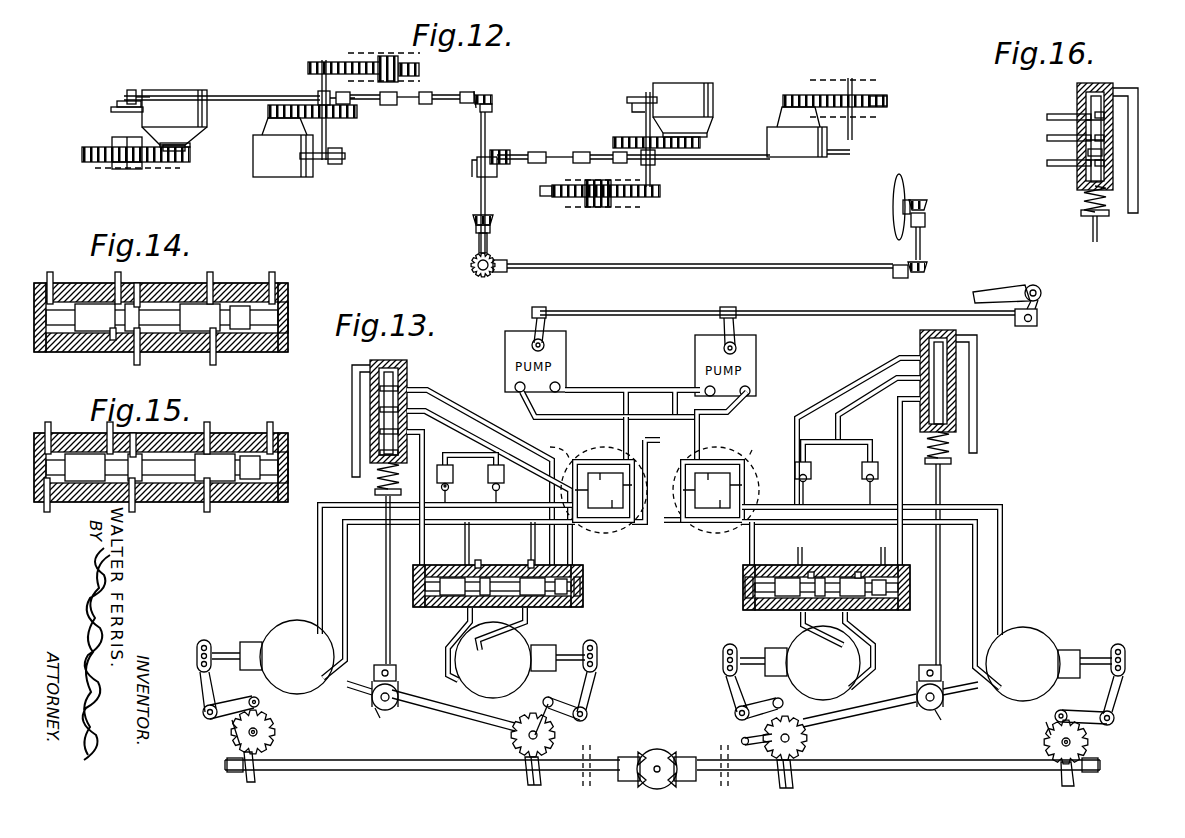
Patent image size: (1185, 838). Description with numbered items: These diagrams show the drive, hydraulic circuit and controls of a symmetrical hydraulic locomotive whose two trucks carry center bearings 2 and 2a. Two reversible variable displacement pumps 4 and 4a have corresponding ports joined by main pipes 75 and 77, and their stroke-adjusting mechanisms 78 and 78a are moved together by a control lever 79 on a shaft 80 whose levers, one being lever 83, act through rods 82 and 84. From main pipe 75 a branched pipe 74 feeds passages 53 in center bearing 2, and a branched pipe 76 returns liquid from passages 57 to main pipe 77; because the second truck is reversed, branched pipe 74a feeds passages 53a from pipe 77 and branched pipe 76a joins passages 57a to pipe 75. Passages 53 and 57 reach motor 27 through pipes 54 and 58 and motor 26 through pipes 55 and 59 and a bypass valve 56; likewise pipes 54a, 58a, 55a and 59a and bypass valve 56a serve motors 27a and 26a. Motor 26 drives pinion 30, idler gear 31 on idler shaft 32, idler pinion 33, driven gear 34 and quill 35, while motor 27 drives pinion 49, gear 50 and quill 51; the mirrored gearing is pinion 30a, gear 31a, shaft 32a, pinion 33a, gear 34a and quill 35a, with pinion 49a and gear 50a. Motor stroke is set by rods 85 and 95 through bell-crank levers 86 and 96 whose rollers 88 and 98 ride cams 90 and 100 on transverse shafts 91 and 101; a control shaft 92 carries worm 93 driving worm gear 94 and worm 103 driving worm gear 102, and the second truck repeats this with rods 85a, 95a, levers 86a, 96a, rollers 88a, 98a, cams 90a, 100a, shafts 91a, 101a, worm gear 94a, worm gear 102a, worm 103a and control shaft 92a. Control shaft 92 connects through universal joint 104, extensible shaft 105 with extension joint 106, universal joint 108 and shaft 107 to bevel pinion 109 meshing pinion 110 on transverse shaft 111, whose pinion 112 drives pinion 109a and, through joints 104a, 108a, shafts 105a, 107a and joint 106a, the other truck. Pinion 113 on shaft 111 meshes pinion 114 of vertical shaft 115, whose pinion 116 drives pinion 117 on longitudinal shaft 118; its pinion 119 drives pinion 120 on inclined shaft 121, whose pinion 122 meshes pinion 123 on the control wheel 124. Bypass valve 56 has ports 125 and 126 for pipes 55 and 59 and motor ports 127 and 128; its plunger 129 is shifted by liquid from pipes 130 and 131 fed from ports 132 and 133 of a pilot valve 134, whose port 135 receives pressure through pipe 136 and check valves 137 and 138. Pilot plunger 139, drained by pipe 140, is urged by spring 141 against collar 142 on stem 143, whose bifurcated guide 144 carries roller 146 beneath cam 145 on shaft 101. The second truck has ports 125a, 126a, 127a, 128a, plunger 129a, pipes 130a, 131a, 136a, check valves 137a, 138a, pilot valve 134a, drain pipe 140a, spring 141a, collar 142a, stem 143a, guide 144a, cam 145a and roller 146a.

In FIG. 13, the center bearing 2 is at (553, 447).
In FIG. 13, the center bearing 2a is at (759, 445).
In FIG. 13, the reversible variable displacement pump 4 is at (566, 344).
In FIG. 13, the reversible variable displacement pump 4a is at (756, 345).
In FIG. 12, the rotary variable displacement hydraulic motor 26 is at (283, 147).
In FIG. 13, the rotary variable displacement hydraulic motor 26 is at (520, 660).
In FIG. 12, the rotary variable displacement hydraulic motor 26a is at (683, 110).
In FIG. 13, the rotary variable displacement hydraulic motor 26a is at (800, 663).
In FIG. 12, the rotary variable displacement hydraulic motor 27 is at (174, 120).
In FIG. 13, the rotary variable displacement hydraulic motor 27 is at (273, 657).
In FIG. 12, the rotary variable displacement hydraulic motor 27a is at (808, 132).
In FIG. 13, the rotary variable displacement hydraulic motor 27a is at (1049, 664).
In FIG. 12, the driving pinion 30 is at (268, 117).
In FIG. 12, the driving pinion 30a is at (700, 130).
In FIG. 12, the idler gear 31 is at (345, 157).
In FIG. 12, the idler gear 31a is at (637, 100).
In FIG. 12, the idler shaft 32 is at (318, 96).
In FIG. 12, the idler shaft 32a is at (656, 166).
In FIG. 12, the idler pinion 33 is at (310, 62).
In FIG. 12, the idler pinion 33a is at (656, 197).
In FIG. 12, the driven gear 34 is at (419, 66).
In FIG. 12, the driven gear 34a is at (548, 197).
In FIG. 12, the driving tube or quill 35 is at (386, 55).
In FIG. 12, the driving tube or quill 35a is at (596, 208).
In FIG. 12, the pinion 49 is at (178, 162).
In FIG. 12, the pinion 49a is at (796, 95).
In FIG. 12, the driven gear 50 is at (96, 164).
In FIG. 12, the driven gear 50a is at (887, 101).
In FIG. 12, the driving quill 51 is at (112, 140).
In FIG. 13, the passages 53 is at (592, 534).
In FIG. 13, the passages 53a is at (740, 534).
In FIG. 13, the pipe 54 is at (348, 614).
In FIG. 13, the pipe 54a is at (979, 605).
In FIG. 14, the pipe 55 is at (115, 282).
In FIG. 13, the pipe 55 is at (465, 540).
In FIG. 15, the pipe 55a is at (211, 437).
In FIG. 13, the pipe 55a is at (856, 544).
In FIG. 14, the bypass valve 56 is at (281, 354).
In FIG. 13, the bypass valve 56 is at (584, 604).
In FIG. 15, the bypass valve 56a is at (281, 505).
In FIG. 13, the bypass valve 56a is at (742, 590).
In FIG. 13, the passages 57 is at (603, 491).
In FIG. 13, the passages 57a is at (712, 491).
In FIG. 13, the pipe 58 is at (317, 574).
In FIG. 13, the pipe 58a is at (1003, 568).
In FIG. 14, the pipe 59 is at (214, 284).
In FIG. 13, the pipe 59 is at (531, 540).
In FIG. 15, the pipe 59a is at (107, 433).
In FIG. 13, the pipe 59a is at (790, 521).
In FIG. 13, the pipe 74 is at (622, 439).
In FIG. 13, the branched pipe 74a is at (703, 439).
In FIG. 13, the main pipe 75 is at (659, 387).
In FIG. 13, the pipe 76 is at (649, 445).
In FIG. 13, the branched pipe 76a is at (680, 515).
In FIG. 13, the main pipe 77 is at (604, 414).
In FIG. 13, the stroke-adjusting mechanism 78 is at (534, 324).
In FIG. 13, the stroke-adjusting mechanism 78a is at (720, 325).
In FIG. 13, the control lever 79 is at (1000, 292).
In FIG. 13, the shaft 80 is at (1041, 294).
In FIG. 13, the rod 82 is at (645, 311).
In FIG. 13, the lever 83 is at (1040, 312).
In FIG. 13, the rod 84 is at (846, 311).
In FIG. 13, the rod 85 is at (200, 642).
In FIG. 13, the rod 85a is at (1127, 660).
In FIG. 13, the bell-crank lever 86 is at (207, 693).
In FIG. 13, the bell-crank lever 86a is at (1116, 692).
In FIG. 13, the roller 88 is at (260, 704).
In FIG. 13, the roller 88a is at (1055, 716).
In FIG. 13, the cam 90 is at (275, 737).
In FIG. 13, the cam 90a is at (1088, 743).
In FIG. 13, the transverse shaft 91 is at (258, 731).
In FIG. 13, the transverse shaft 91a is at (1058, 745).
In FIG. 12, the control shaft 92 is at (262, 96).
In FIG. 13, the control shaft 92 is at (405, 762).
In FIG. 12, the control shaft 92a is at (741, 160).
In FIG. 13, the control shaft 92a is at (920, 770).
In FIG. 12, the worm 93 is at (135, 90).
In FIG. 13, the worm 93 is at (245, 782).
In FIG. 13, the worm gear 94 is at (232, 745).
In FIG. 13, the worm gear 94a is at (1045, 741).
In FIG. 13, the rod 95 is at (599, 658).
In FIG. 13, the rod 95a is at (723, 655).
In FIG. 13, the bell-crank lever 96 is at (588, 690).
In FIG. 13, the bell-crank lever 96a is at (728, 685).
In FIG. 13, the roller 98 is at (555, 688).
In FIG. 13, the roller 98a is at (778, 697).
In FIG. 13, the cam 100 is at (540, 722).
In FIG. 13, the cam 100a is at (750, 737).
In FIG. 13, the transverse shaft 101 is at (455, 718).
In FIG. 13, the transverse shaft 101a is at (875, 721).
In FIG. 13, the worm gear 102 is at (512, 742).
In FIG. 13, the worm gear 102a is at (808, 742).
In FIG. 13, the worm 103 is at (526, 788).
In FIG. 13, the worm 103a is at (792, 786).
In FIG. 12, the universal joint 104 is at (348, 105).
In FIG. 12, the universal joint 104a is at (618, 163).
In FIG. 12, the extensible shaft 105 is at (372, 92).
In FIG. 12, the extensible shaft 105a is at (602, 155).
In FIG. 12, the extension joint 106 is at (390, 105).
In FIG. 12, the extension joint 106a is at (577, 152).
In FIG. 12, the shaft 107 is at (449, 93).
In FIG. 12, the shaft 107a is at (535, 146).
In FIG. 12, the universal joint 108 is at (426, 104).
In FIG. 12, the universal joint 108a is at (537, 164).
In FIG. 12, the bevel pinion 109 is at (485, 95).
In FIG. 12, the bevel pinion 109a is at (502, 150).
In FIG. 12, the bevel pinion 110 is at (492, 106).
In FIG. 12, the transverse shaft 111 is at (480, 196).
In FIG. 12, the bevel pinion 112 is at (477, 167).
In FIG. 12, the bevel pinion 113 is at (474, 229).
In FIG. 12, the bevel pinion 114 is at (492, 233).
In FIG. 12, the vertical shaft 115 is at (478, 247).
In FIG. 12, the bevel pinion 116 is at (471, 270).
In FIG. 12, the bevel pinion 117 is at (495, 272).
In FIG. 12, the longitudinal shaft 118 is at (648, 263).
In FIG. 12, the bevel pinion 119 is at (900, 278).
In FIG. 12, the bevel pinion 120 is at (926, 269).
In FIG. 12, the inclined shaft 121 is at (921, 238).
In FIG. 12, the bevel pinion 122 is at (926, 216).
In FIG. 12, the bevel pinion 123 is at (920, 200).
In FIG. 12, the control wheel 124 is at (893, 197).
In FIG. 14, the port 125 is at (113, 342).
In FIG. 13, the port 125 is at (474, 570).
In FIG. 15, the port 125a is at (208, 510).
In FIG. 13, the port 125a is at (856, 580).
In FIG. 14, the port 126 is at (214, 345).
In FIG. 13, the port 126 is at (530, 612).
In FIG. 15, the port 126a is at (96, 503).
In FIG. 13, the port 126a is at (775, 609).
In FIG. 14, the port 127 is at (139, 286).
In FIG. 13, the port 127 is at (465, 608).
In FIG. 15, the port 127a is at (186, 508).
In FIG. 13, the port 127a is at (848, 580).
In FIG. 14, the port 128 is at (141, 360).
In FIG. 13, the port 128 is at (529, 571).
In FIG. 15, the port 128a is at (136, 440).
In FIG. 13, the port 128a is at (815, 548).
In FIG. 14, the plunger 129 is at (161, 317).
In FIG. 13, the plunger 129 is at (584, 585).
In FIG. 15, the plunger 129a is at (240, 462).
In FIG. 13, the plunger 129a is at (876, 610).
In FIG. 16, the pipe 130 is at (1050, 165).
In FIG. 14, the pipe 130 is at (48, 283).
In FIG. 13, the pipe 130 is at (424, 549).
In FIG. 15, the pipe 130a is at (280, 414).
In FIG. 13, the pipe 130a is at (901, 553).
In FIG. 16, the pipe 131 is at (1049, 114).
In FIG. 14, the pipe 131 is at (276, 284).
In FIG. 13, the pipe 131 is at (496, 413).
In FIG. 15, the pipe 131a is at (48, 424).
In FIG. 13, the pipe 131a is at (862, 384).
In FIG. 16, the port 132 is at (1105, 170).
In FIG. 13, the port 132 is at (380, 438).
In FIG. 16, the port 133 is at (1105, 118).
In FIG. 13, the port 133 is at (380, 392).
In FIG. 16, the pilot valve 134 is at (1114, 86).
In FIG. 13, the pilot valve 134 is at (407, 362).
In FIG. 13, the pilot valve 134a is at (920, 334).
In FIG. 16, the port 135 is at (1105, 140).
In FIG. 13, the port 135 is at (380, 415).
In FIG. 16, the pipe 136 is at (1050, 135).
In FIG. 13, the pipe 136 is at (466, 458).
In FIG. 13, the pipe 136a is at (858, 412).
In FIG. 13, the check valve 137 is at (500, 488).
In FIG. 13, the check valve 137a is at (866, 482).
In FIG. 13, the check valve 138 is at (449, 488).
In FIG. 13, the check valve 138a is at (811, 476).
In FIG. 16, the plunger 139 is at (1088, 152).
In FIG. 13, the plunger 139 is at (380, 452).
In FIG. 16, the drain pipe 140 is at (1138, 111).
In FIG. 13, the drain pipe 140 is at (352, 371).
In FIG. 13, the drain pipe 140a is at (977, 408).
In FIG. 16, the helical compression spring 141 is at (1085, 203).
In FIG. 13, the helical compression spring 141 is at (378, 487).
In FIG. 13, the helical compression spring 141a is at (950, 455).
In FIG. 16, the collar 142 is at (1112, 214).
In FIG. 13, the collar 142 is at (375, 493).
In FIG. 13, the collar 142a is at (945, 464).
In FIG. 16, the valve stem 143 is at (1092, 222).
In FIG. 13, the valve stem 143 is at (385, 554).
In FIG. 13, the valve stem 143a is at (942, 497).
In FIG. 13, the bifurcated guide 144 is at (376, 712).
In FIG. 13, the bifurcated guide 144a is at (943, 713).
In FIG. 13, the cam 145 is at (400, 694).
In FIG. 13, the cam 145a is at (917, 696).
In FIG. 13, the roller 146 is at (396, 670).
In FIG. 13, the roller 146a is at (926, 670).